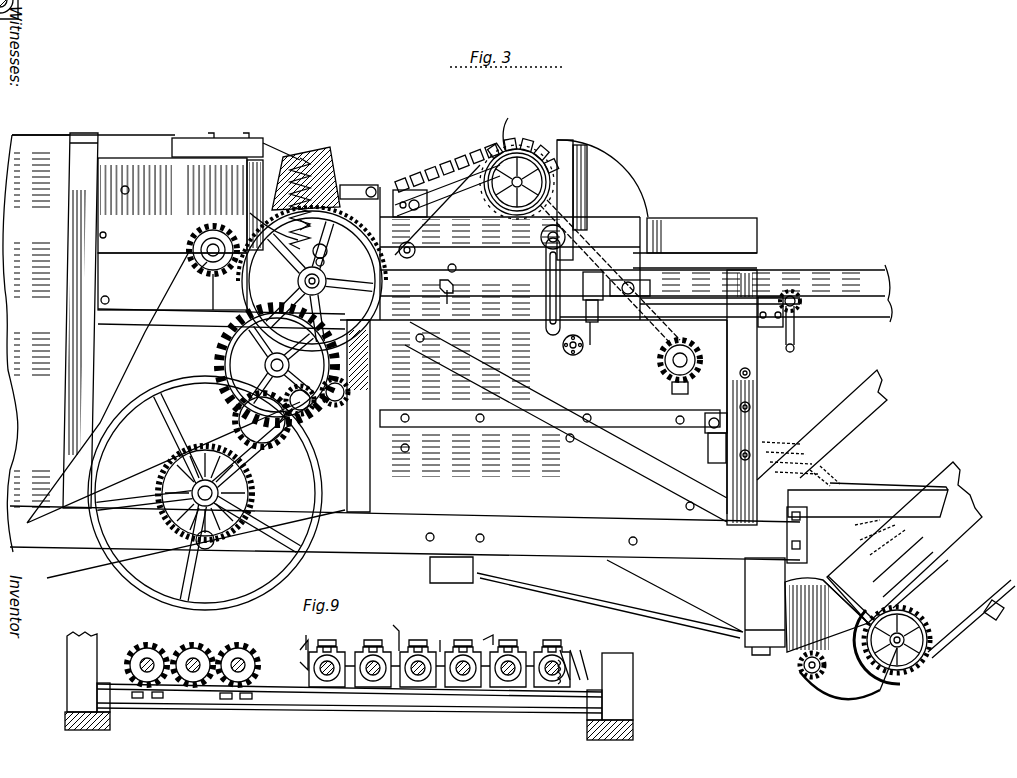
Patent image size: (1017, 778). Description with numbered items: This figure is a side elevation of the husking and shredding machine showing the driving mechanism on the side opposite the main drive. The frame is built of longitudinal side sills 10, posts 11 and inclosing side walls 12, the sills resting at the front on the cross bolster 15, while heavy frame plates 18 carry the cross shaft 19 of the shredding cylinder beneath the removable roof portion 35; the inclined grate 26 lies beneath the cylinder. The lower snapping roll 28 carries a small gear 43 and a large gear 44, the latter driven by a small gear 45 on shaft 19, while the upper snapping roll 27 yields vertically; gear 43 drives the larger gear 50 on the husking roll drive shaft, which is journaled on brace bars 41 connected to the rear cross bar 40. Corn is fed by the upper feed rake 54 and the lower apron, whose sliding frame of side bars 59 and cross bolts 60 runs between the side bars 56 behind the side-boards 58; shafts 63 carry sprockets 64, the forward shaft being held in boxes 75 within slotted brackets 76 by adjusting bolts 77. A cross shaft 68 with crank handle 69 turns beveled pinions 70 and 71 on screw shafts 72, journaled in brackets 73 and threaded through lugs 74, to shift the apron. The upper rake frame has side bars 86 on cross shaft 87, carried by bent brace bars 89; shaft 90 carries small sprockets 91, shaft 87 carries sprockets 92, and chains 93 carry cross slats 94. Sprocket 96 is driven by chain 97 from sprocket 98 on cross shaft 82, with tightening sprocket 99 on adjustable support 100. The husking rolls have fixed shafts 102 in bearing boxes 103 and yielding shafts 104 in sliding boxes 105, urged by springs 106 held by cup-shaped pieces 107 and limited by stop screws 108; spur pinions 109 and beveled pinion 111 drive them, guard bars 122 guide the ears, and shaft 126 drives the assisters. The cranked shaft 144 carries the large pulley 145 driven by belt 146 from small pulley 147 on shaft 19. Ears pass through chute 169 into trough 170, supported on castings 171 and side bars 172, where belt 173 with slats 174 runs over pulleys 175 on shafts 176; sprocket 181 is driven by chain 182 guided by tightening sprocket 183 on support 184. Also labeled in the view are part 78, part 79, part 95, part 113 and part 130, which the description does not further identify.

In FIG. 3, the main longitudinal side sills 10 is at (382, 558).
In FIG. 9, the main longitudinal side sills 10 is at (65, 722).
In FIG. 3, the posts 11 is at (66, 453).
In FIG. 9, the posts 11 is at (80, 695).
In FIG. 3, the inclosing side walls 12 is at (533, 421).
In FIG. 3, the cross bolster 15 is at (757, 593).
In FIG. 3, the frame plates 18 is at (221, 243).
In FIG. 3, the cross shaft 19 is at (207, 244).
In FIG. 3, the inclined grate 26 is at (310, 247).
In FIG. 3, the upper snapping roll 27 is at (314, 264).
In FIG. 3, the lower snapping roll 28 is at (324, 282).
In FIG. 3, the roof or deck portion 35 is at (290, 153).
In FIG. 3, the rear cross bar 40 is at (350, 410).
In FIG. 9, the rear cross bar 40 is at (285, 712).
In FIG. 9, the brace bars 41 is at (108, 712).
In FIG. 3, the small gear 43 is at (320, 288).
In FIG. 3, the large gear 44 is at (364, 330).
In FIG. 3, the small gear 45 is at (197, 272).
In FIG. 3, the larger gear 50 is at (346, 388).
In FIG. 3, the upper feed rake 54 is at (465, 150).
In FIG. 3, the longitudinal side bars 56 is at (722, 290).
In FIG. 3, the side-boards 58 is at (623, 233).
In FIG. 3, the side bars 59 is at (492, 305).
In FIG. 3, the cross bolts 60 is at (448, 294).
In FIG. 3, the shafts 63 is at (415, 256).
In FIG. 3, the sprockets 64 is at (457, 268).
In FIG. 3, the cross shaft 68 is at (803, 313).
In FIG. 3, the crank handle 69 is at (795, 346).
In FIG. 3, the beveled pinions 70 is at (807, 297).
In FIG. 3, the beveled pinions 71 is at (790, 292).
In FIG. 3, the screw shafts 72 is at (715, 298).
In FIG. 3, the brackets 73 is at (773, 327).
In FIG. 3, the brackets or lugs 74 is at (592, 332).
In FIG. 3, the boxes 75 is at (630, 278).
In FIG. 3, the slotted brackets 76 is at (655, 257).
In FIG. 3, the adjusting bolts 77 is at (265, 218).
In FIG. 3, the bracket 78 is at (327, 187).
In FIG. 3, the spring box 79 is at (305, 170).
In FIG. 3, the cross shaft 82 is at (700, 375).
In FIG. 3, the side bars 86 is at (470, 160).
In FIG. 3, the cross shaft 87 is at (515, 142).
In FIG. 3, the bent brace bars 89 is at (437, 220).
In FIG. 3, the shaft 90 is at (430, 162).
In FIG. 3, the small sprocket wheels 91 is at (280, 423).
In FIG. 3, the sprocket wheels 92 is at (240, 415).
In FIG. 3, the chains 93 is at (448, 155).
In FIG. 3, the cross slats 94 is at (508, 118).
In FIG. 3, the post 95 is at (540, 108).
In FIG. 3, the sprocket 96 is at (560, 172).
In FIG. 3, the drive chain 97 is at (585, 213).
In FIG. 3, the sprocket wheel 98 is at (668, 368).
In FIG. 3, the tightening sprocket wheel 99 is at (541, 237).
In FIG. 3, the adjustable support 100 is at (545, 296).
In FIG. 9, the shafts 102 is at (150, 660).
In FIG. 9, the bearing boxes 103 is at (340, 650).
In FIG. 9, the shafts 104 is at (193, 680).
In FIG. 9, the boxes 105 is at (320, 650).
In FIG. 9, the coiled cushioned springs 106 is at (340, 648).
In FIG. 9, the cup-shaped pieces 107 is at (633, 670).
In FIG. 9, the stop screws 108 is at (500, 650).
In FIG. 3, the spur pinions 109 is at (294, 412).
In FIG. 9, the spur pinions 109 is at (160, 698).
In FIG. 3, the large beveled pinion 111 is at (432, 380).
In FIG. 3, the gear 113 is at (220, 357).
In FIG. 9, the guard or guiding bars 122 is at (306, 640).
In FIG. 3, the shaft 126 is at (727, 423).
In FIG. 3, the disk 130 is at (573, 356).
In FIG. 3, the cranked shaft 144 is at (250, 496).
In FIG. 3, the large pulley 145 is at (118, 433).
In FIG. 3, the drive belt 146 is at (118, 385).
In FIG. 3, the small pulley 147 is at (207, 266).
In FIG. 3, the funnel shaped chute 169 is at (852, 462).
In FIG. 3, the trough 170 is at (904, 542).
In FIG. 3, the brackets or castings 171 is at (857, 645).
In FIG. 3, the side bars 172 is at (888, 266).
In FIG. 3, the endless conveyer belt 173 is at (953, 640).
In FIG. 3, the cross slats 174 is at (990, 602).
In FIG. 3, the pulleys 175 is at (912, 617).
In FIG. 3, the shafts 176 is at (886, 660).
In FIG. 3, the sprocket wheel 181 is at (872, 695).
In FIG. 3, the drive chain 182 is at (676, 630).
In FIG. 3, the guiding or tightening sprocket 183 is at (807, 678).
In FIG. 3, the support 184 is at (808, 648).